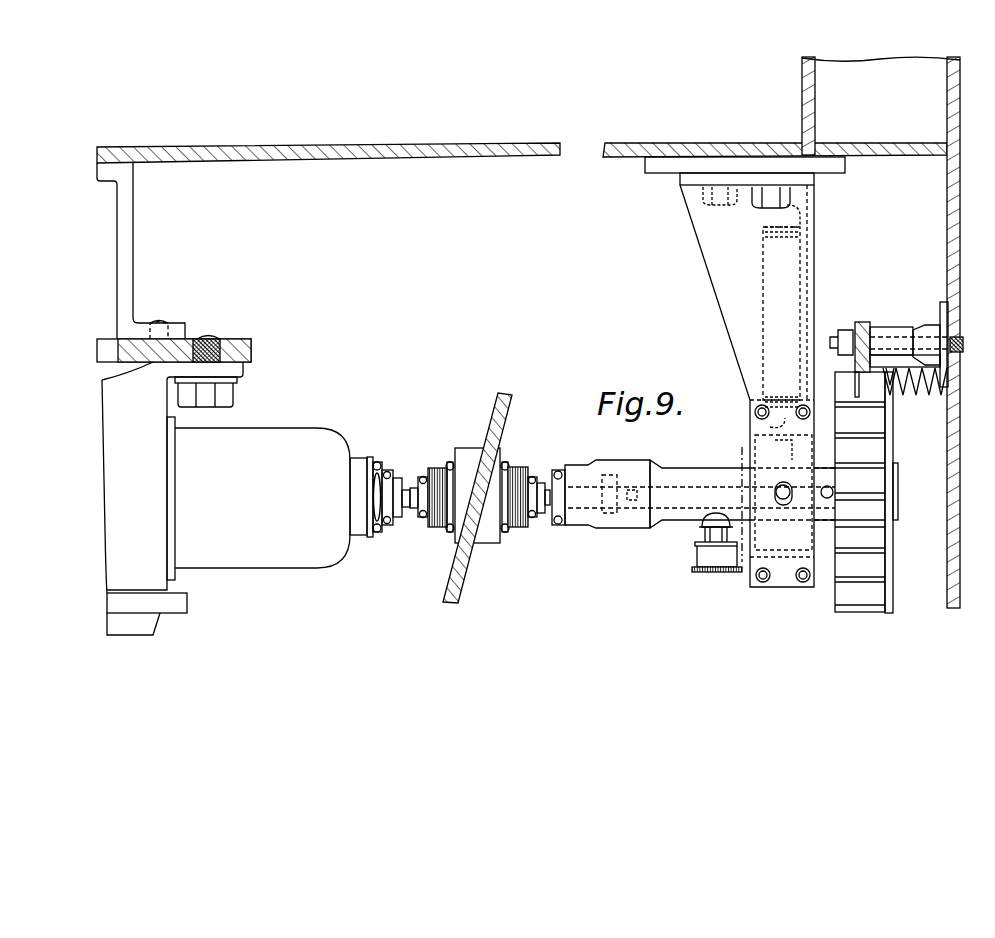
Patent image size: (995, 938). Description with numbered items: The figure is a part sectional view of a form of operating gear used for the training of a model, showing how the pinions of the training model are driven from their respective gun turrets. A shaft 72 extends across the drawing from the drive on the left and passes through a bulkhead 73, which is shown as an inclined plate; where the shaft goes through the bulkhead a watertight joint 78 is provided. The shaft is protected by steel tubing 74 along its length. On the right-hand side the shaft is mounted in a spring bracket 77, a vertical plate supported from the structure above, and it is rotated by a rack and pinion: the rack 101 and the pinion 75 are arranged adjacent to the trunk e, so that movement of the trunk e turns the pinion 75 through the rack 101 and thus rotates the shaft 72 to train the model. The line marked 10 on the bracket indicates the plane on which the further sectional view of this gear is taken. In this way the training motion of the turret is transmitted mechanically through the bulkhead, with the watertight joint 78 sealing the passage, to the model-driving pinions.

The section line 10/ 10 is at (738, 509).
The shaft 72 is at (411, 490).
The bulkhead 73 is at (500, 413).
The steel tubing 74 is at (538, 473).
The pinion 75 is at (873, 437).
The spring bracket 77 is at (785, 577).
The watertight joint 78 is at (487, 533).
The rack 101 is at (915, 396).
The trunk e is at (957, 452).